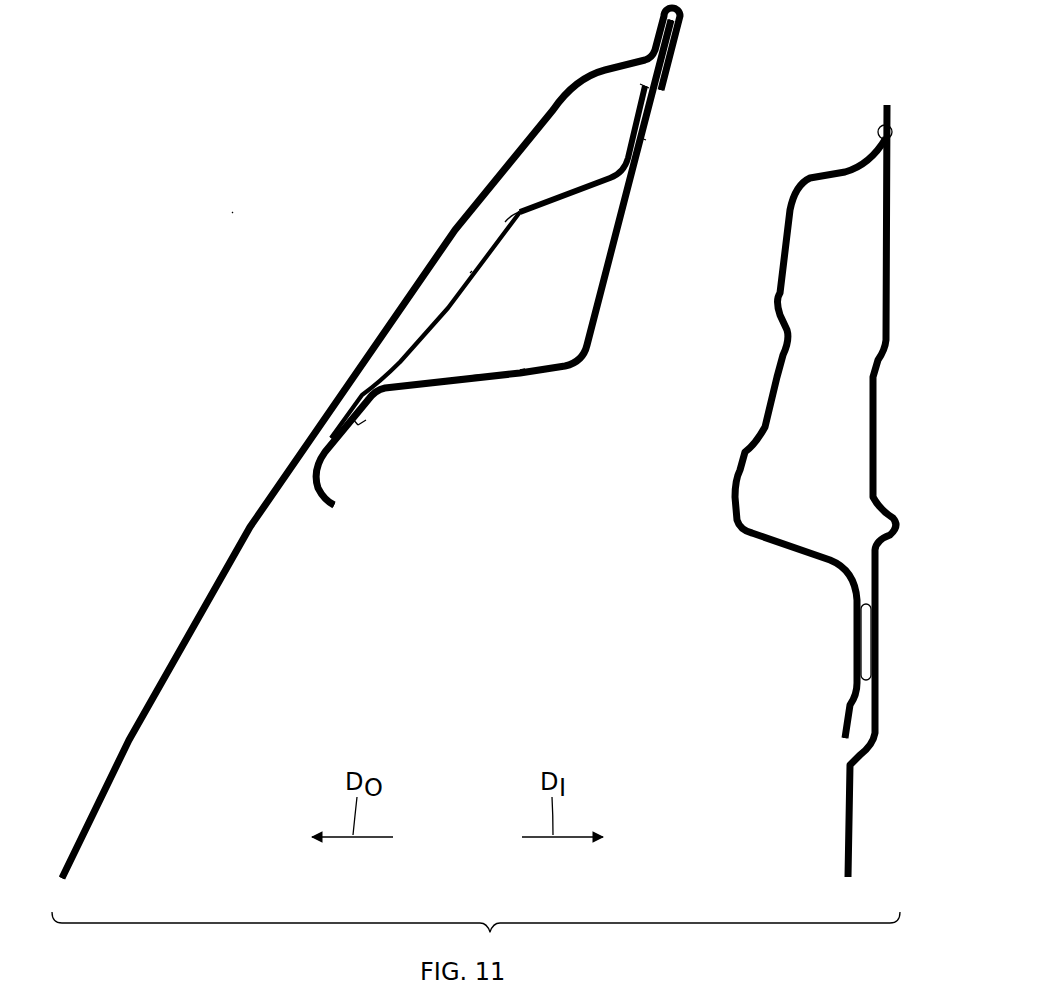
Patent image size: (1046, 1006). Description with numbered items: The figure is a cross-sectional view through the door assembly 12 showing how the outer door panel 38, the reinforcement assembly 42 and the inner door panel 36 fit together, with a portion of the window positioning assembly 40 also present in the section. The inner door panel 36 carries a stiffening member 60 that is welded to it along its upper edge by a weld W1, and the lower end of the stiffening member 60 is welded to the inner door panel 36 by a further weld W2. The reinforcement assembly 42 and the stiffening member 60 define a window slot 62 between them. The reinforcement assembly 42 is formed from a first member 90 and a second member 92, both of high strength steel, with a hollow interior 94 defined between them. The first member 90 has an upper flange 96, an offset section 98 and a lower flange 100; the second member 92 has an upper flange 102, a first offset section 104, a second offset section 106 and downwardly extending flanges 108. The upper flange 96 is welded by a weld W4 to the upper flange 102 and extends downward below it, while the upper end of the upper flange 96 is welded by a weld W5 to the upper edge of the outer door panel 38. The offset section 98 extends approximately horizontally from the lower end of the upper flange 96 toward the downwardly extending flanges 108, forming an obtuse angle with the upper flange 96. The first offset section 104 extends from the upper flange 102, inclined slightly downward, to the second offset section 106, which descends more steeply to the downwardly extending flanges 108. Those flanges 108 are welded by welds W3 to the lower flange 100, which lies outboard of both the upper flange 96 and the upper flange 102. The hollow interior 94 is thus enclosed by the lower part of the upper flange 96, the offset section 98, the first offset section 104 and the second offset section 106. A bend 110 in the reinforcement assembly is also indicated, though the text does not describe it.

The door assembly 12 is at (230, 210).
The inner door panel 36 is at (895, 268).
The outer door panel 38 is at (340, 376).
The window positioning assembly 40 is at (851, 818).
The reinforcement assembly 42 is at (512, 208).
The stiffening member 60 is at (780, 372).
The window slot 62 is at (786, 240).
The first member 90 is at (597, 288).
The second member 92 is at (497, 253).
The hollow interior 94 is at (481, 345).
The upper flange 96 is at (664, 92).
The offset section 98 is at (522, 370).
The lower flange 100 is at (345, 446).
The upper flange 102 is at (637, 122).
The first offset section 104 is at (577, 190).
The second offset section 106 is at (470, 273).
The downwardly extending flanges 108 is at (362, 422).
The bend 110 is at (398, 372).
The weld W1 is at (894, 134).
The weld W2 is at (866, 638).
The welds W3 is at (364, 426).
The weld W4 is at (646, 140).
The weld W5 is at (682, 40).